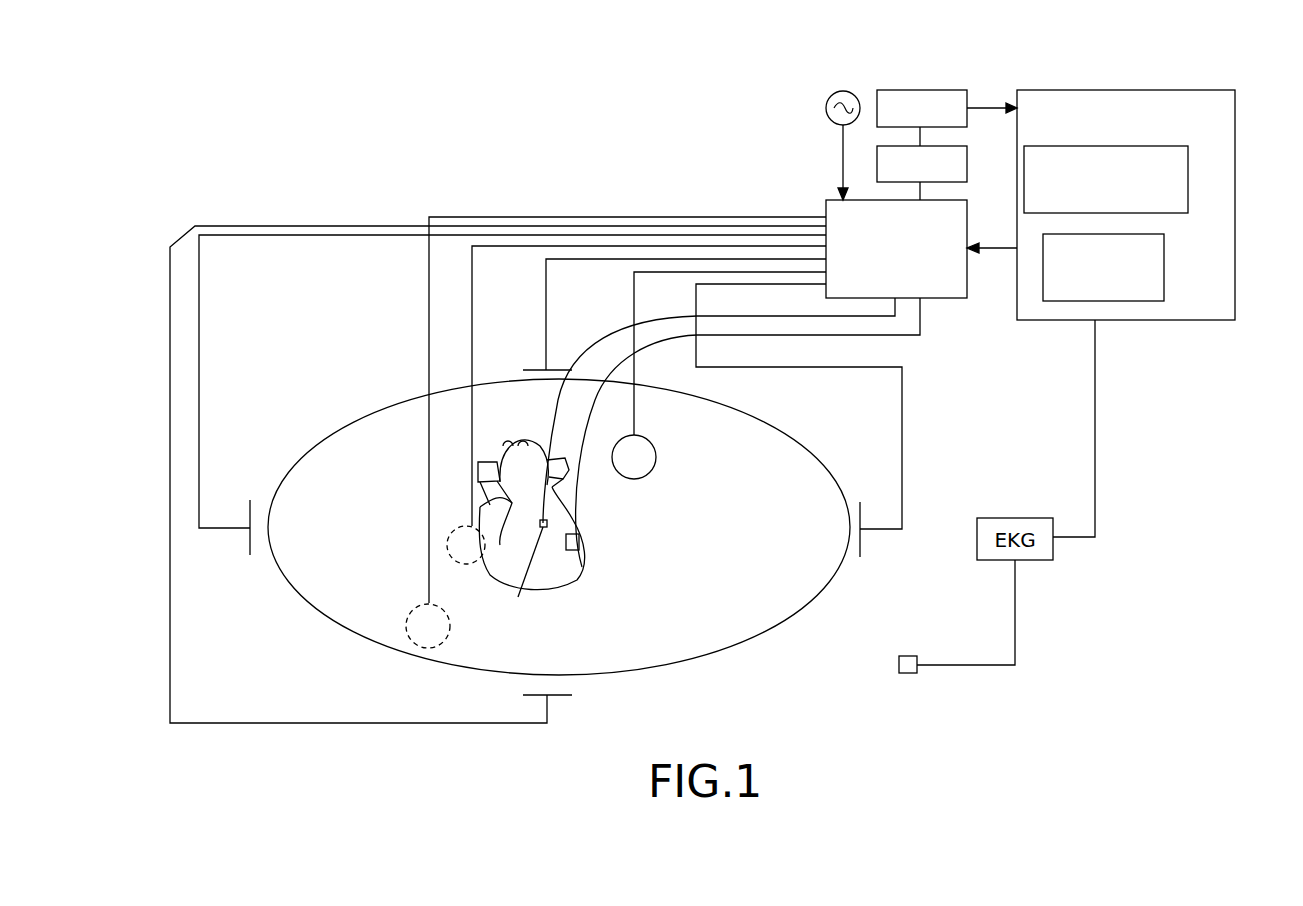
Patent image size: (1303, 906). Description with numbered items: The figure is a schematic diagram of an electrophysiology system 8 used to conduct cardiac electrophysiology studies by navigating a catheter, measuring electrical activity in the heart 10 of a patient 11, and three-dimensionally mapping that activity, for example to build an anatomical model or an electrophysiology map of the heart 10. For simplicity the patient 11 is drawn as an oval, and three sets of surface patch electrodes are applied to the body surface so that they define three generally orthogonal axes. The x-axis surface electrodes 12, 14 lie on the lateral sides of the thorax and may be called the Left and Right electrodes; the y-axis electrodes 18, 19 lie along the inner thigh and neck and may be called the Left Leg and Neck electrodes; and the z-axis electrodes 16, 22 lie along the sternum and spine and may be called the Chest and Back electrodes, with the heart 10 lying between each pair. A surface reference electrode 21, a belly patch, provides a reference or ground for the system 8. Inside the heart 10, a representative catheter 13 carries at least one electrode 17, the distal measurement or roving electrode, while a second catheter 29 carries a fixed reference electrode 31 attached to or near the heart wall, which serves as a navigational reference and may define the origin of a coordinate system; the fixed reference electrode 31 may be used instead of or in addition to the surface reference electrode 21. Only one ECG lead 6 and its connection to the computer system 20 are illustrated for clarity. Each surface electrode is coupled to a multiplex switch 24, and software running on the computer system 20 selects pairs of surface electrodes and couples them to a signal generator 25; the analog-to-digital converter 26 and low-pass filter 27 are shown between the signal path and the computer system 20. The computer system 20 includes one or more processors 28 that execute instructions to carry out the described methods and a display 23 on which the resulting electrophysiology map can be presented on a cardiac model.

The electrophysiology system 8 is at (249, 134).
The signal generator 25 is at (829, 96).
The analog-to-digital converter 26 is at (939, 90).
The low pass filter 27 is at (967, 157).
The multiplex switch 24 is at (884, 272).
The computer system 20 is at (1191, 304).
The processors 28 is at (1094, 204).
The display 23 is at (1091, 293).
The catheter 13 is at (921, 322).
The z-axis electrode 22 is at (472, 297).
The patient 11 is at (770, 423).
The x-axis surface electrode 12 is at (540, 368).
The x-axis surface electrode 14 is at (550, 703).
The y-axis electrode 18 is at (248, 546).
The y-axis electrode 19 is at (862, 540).
The z-axis electrode 16 is at (636, 405).
The surface reference electrode 21 is at (429, 541).
The second catheter 29 is at (565, 397).
The fixed reference electrode 31 is at (525, 573).
The catheter electrode 17 is at (582, 567).
The heart 10 is at (581, 541).
The ECG lead 6 is at (908, 674).